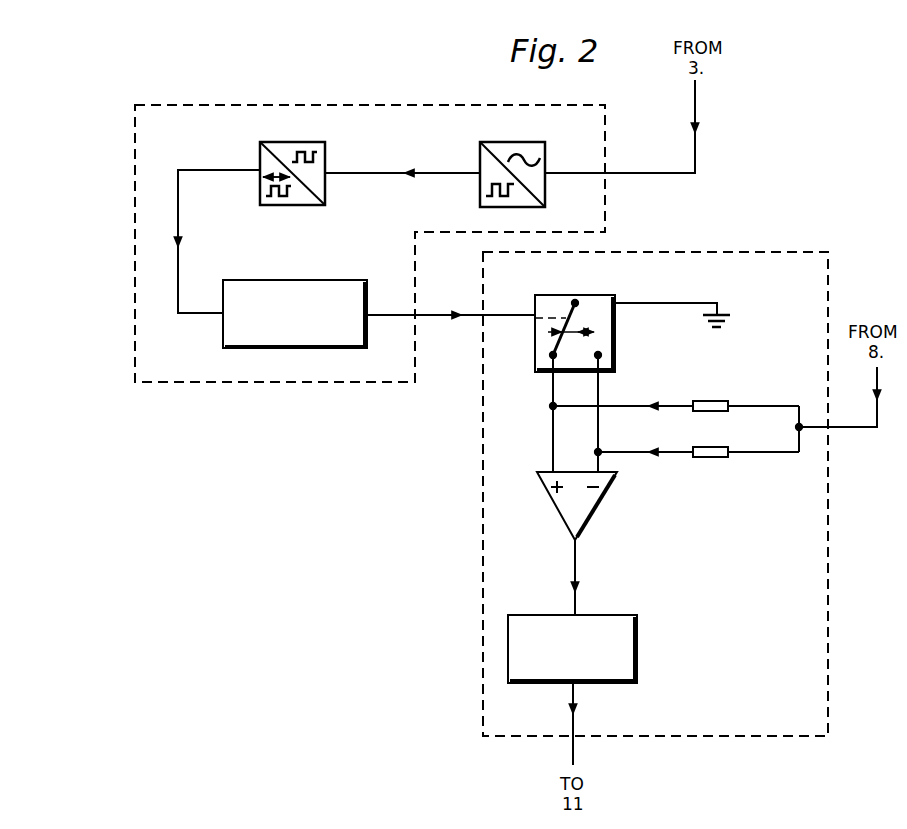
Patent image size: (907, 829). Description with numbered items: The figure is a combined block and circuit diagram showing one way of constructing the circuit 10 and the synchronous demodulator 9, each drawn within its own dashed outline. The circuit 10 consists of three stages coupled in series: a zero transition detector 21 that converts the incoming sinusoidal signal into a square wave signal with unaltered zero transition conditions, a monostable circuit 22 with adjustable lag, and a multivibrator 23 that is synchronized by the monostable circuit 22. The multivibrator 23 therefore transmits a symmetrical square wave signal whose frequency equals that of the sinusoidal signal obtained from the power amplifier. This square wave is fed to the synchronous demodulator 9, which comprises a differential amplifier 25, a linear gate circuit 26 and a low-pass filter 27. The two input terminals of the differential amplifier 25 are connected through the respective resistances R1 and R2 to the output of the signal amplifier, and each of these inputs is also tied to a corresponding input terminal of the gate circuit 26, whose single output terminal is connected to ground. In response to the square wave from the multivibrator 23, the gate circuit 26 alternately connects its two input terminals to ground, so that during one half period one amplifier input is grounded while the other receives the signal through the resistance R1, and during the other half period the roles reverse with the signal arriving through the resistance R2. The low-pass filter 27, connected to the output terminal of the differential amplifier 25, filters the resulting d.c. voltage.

The circuit 10 is at (345, 104).
The zero transition detector 21 is at (516, 142).
The monostable circuit 22 is at (260, 150).
The multivibrator 23 is at (275, 348).
The synchronous demodulator 9 is at (480, 667).
The linear gate circuit 26 is at (533, 358).
The differential amplifier 25 is at (558, 518).
The low-pass filter 27 is at (637, 646).
The resistance R1 is at (676, 393).
The resistance R2 is at (698, 466).